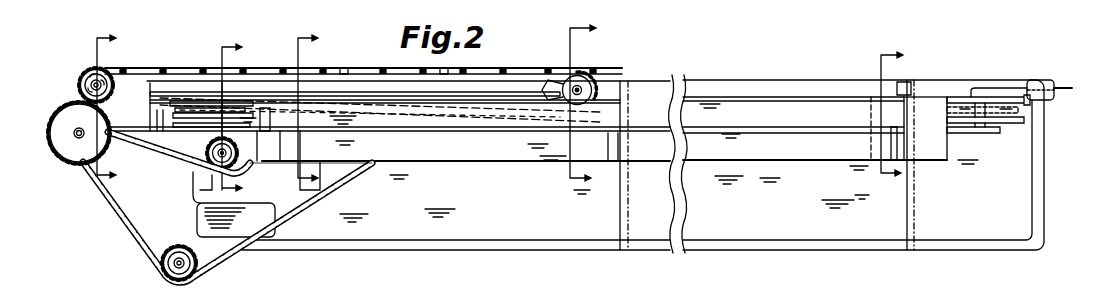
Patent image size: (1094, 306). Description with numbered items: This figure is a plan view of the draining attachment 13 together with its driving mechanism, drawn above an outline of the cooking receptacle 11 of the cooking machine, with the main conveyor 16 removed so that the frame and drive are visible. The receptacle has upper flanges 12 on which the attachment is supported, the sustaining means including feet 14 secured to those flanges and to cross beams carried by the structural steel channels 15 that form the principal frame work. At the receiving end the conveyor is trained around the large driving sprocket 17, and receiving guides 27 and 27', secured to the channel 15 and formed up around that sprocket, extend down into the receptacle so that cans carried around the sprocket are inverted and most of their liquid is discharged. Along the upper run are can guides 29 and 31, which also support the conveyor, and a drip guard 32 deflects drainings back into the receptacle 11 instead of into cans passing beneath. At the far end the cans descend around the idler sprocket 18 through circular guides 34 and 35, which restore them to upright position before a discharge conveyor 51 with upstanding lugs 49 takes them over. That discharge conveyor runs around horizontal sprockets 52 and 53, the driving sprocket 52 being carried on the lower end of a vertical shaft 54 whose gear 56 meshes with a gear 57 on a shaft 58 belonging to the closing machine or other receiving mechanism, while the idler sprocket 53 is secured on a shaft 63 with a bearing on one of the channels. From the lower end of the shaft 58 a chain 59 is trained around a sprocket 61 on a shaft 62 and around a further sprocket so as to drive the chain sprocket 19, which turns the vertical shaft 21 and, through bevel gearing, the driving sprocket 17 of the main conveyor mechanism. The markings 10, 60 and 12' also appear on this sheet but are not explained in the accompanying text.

The section line 10- 10 is at (888, 113).
The cooking receptacle 11 is at (716, 222).
The upper flanges 12 is at (863, 160).
The cross member 12' is at (924, 140).
The draining attachment 13 is at (583, 95).
The feet 14 is at (300, 106).
The structural steel channels 15 is at (127, 152).
The conveyor 16 is at (103, 104).
The driving sprocket 17 is at (193, 124).
The idler sprocket 18 is at (1026, 112).
The chain sprocket 19 is at (222, 163).
The vertical shaft 21 is at (215, 172).
The receiving guide 27 is at (196, 139).
The receiving guide 27' is at (355, 76).
The can guide 29 is at (240, 165).
The can guide 31 is at (240, 104).
The drip guard 32 is at (810, 150).
The circular guide 34 is at (1006, 126).
The circular guide 35 is at (1010, 98).
The upstanding lugs 49 is at (350, 68).
The discharge conveyor 51 is at (510, 68).
The horizontal sprocket 52 is at (77, 83).
The idler sprocket 53 is at (585, 86).
The vertical shaft 54 is at (88, 78).
The gear 56 is at (107, 74).
The gear 57 is at (67, 150).
The shaft 58 is at (72, 128).
The chain 59 is at (143, 246).
The cable 60 is at (586, 104).
The sprocket 61 is at (210, 262).
The shaft 62 is at (178, 275).
The shaft 63 is at (580, 84).